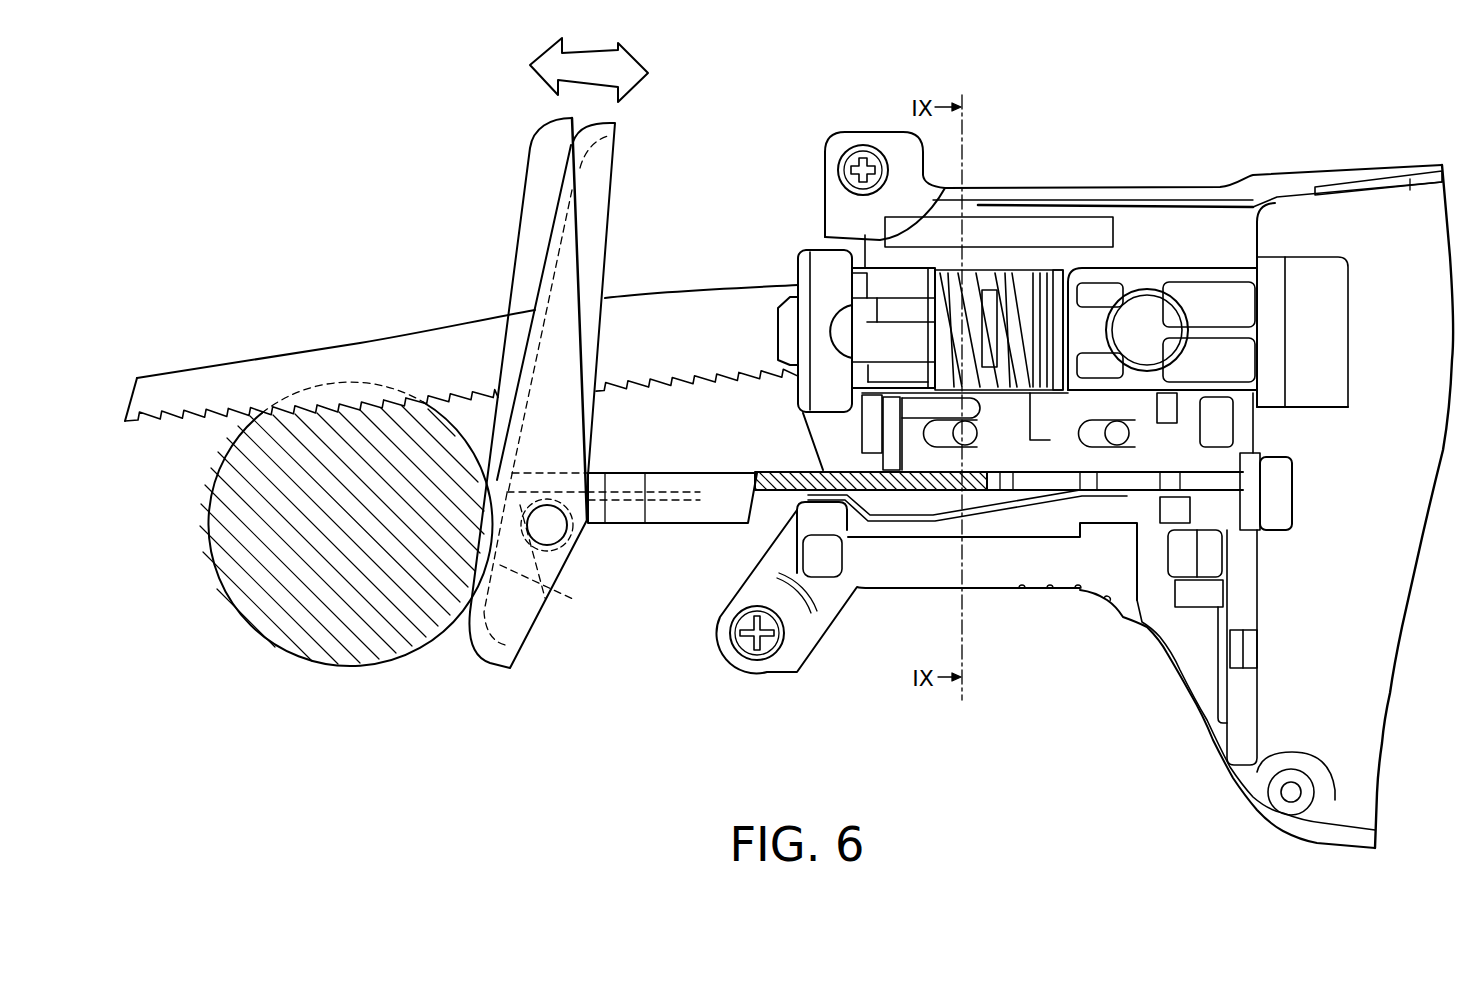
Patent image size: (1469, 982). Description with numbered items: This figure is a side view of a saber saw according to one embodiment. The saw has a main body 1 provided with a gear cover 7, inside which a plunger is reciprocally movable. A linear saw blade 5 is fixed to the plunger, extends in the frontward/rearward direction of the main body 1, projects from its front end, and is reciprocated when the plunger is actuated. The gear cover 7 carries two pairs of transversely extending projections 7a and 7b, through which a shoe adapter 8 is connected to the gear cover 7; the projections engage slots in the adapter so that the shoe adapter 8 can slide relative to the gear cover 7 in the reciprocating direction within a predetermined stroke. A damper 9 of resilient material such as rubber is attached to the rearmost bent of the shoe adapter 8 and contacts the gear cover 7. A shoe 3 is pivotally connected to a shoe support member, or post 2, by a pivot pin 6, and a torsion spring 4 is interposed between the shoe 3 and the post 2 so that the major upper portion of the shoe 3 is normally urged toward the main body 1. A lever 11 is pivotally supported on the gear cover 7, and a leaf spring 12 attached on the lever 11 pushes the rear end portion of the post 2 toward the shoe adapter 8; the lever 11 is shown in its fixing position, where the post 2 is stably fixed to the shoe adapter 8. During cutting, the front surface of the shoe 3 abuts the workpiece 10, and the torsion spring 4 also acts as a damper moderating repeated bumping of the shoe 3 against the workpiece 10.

The main body 1 is at (1286, 190).
The post 2 is at (670, 500).
The shoe 3 is at (602, 163).
The torsion spring 4 is at (524, 638).
The saw blade 5 is at (368, 358).
The pivot pin 6 is at (551, 533).
The gear cover 7 is at (1144, 228).
The projection 7a is at (1117, 445).
The projection 7b is at (967, 443).
The shoe adapter 8 is at (927, 456).
The damper 9 is at (1280, 505).
The workpiece 10 is at (289, 637).
The lever 11 is at (877, 577).
The leaf spring 12 is at (1020, 537).